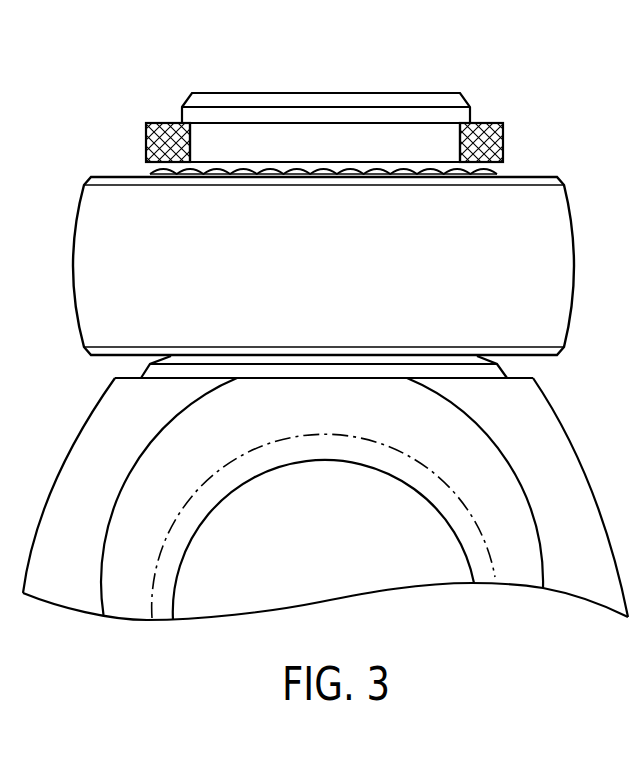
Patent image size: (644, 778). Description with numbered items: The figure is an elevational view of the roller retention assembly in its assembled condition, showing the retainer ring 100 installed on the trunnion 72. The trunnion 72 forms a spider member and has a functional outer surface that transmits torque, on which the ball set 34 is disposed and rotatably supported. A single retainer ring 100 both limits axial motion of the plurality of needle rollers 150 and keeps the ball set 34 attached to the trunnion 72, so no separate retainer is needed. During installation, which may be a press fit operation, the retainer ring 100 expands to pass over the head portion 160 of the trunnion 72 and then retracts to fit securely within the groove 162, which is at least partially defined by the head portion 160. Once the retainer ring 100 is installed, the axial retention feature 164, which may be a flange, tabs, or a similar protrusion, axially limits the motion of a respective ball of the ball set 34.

The ball set 34 is at (98, 313).
The trunnion 72 is at (273, 101).
The retainer ring 100 is at (301, 109).
The needle rollers 150 is at (150, 170).
The head portion 160 is at (180, 108).
The groove 162 is at (484, 151).
The axial retention feature 164 is at (505, 123).